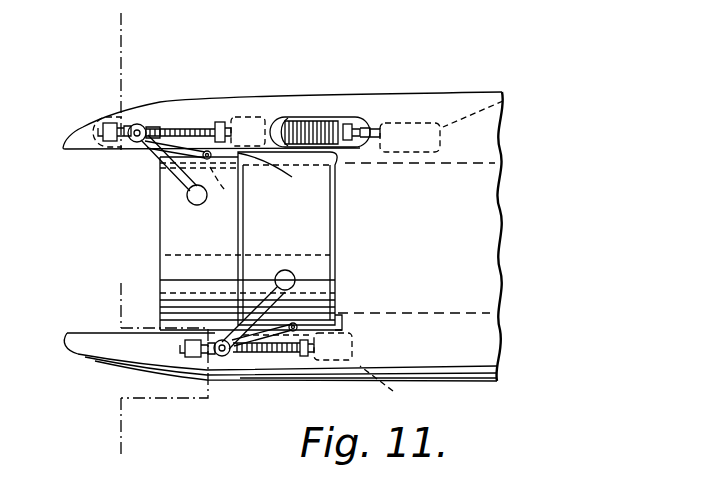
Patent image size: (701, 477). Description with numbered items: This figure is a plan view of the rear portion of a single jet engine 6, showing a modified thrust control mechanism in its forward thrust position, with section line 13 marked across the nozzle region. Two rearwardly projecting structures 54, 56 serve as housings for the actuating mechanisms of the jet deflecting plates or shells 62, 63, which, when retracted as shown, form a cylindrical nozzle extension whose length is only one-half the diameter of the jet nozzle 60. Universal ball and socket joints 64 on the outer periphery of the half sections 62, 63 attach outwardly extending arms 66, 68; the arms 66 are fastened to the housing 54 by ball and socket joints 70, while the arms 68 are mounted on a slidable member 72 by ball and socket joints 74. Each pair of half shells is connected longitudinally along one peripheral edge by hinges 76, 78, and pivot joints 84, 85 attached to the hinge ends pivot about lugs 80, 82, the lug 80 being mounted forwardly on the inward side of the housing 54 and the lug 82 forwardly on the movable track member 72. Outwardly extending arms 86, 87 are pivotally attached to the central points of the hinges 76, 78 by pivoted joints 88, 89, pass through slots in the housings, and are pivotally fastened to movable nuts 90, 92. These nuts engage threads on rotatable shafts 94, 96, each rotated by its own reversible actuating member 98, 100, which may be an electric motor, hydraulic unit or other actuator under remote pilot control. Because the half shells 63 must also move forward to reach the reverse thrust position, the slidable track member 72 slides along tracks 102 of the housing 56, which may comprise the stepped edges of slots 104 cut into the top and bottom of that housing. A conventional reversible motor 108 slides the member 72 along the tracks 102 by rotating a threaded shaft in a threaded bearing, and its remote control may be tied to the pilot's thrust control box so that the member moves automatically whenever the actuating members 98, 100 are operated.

The single jet engine 6 is at (512, 150).
The section line 13- 13 is at (160, 32).
The rearwardly projecting structure 54 is at (97, 345).
The rearwardly projecting structure 56 is at (80, 133).
The jet nozzle 60 is at (476, 313).
The jet deflecting plate or shell 62 is at (336, 215).
The jet deflecting plate or shell 63 is at (173, 244).
The universal ball and socket joint 64 is at (190, 200).
The outwardly extending arm 66 is at (262, 302).
The outwardly extending arm 68 is at (178, 178).
The ball and socket joint 70 is at (223, 357).
The slidable track member 72 is at (117, 122).
The ball and socket joint 74 is at (137, 124).
The hinge 76 is at (337, 280).
The hinge 78 is at (225, 190).
The lug 80 is at (312, 321).
The lug 82 is at (275, 176).
The pivot joint 84 is at (339, 299).
The pivot joint 85 is at (243, 190).
The outwardly extending arm 86 is at (282, 355).
The outwardly extending arm 87 is at (165, 159).
The pivoted joint 88 is at (318, 331).
The pivoted joint 89 is at (226, 122).
The movable nut 90 is at (236, 356).
The movable nut 92 is at (152, 128).
The rotatable shaft 94 is at (288, 356).
The rotatable shaft 96 is at (176, 128).
The reversible actuating member 98 is at (338, 363).
The reversible actuating member 100 is at (270, 118).
The track 102 is at (314, 126).
The slot 104 is at (360, 121).
The reversible motor 108 is at (452, 110).